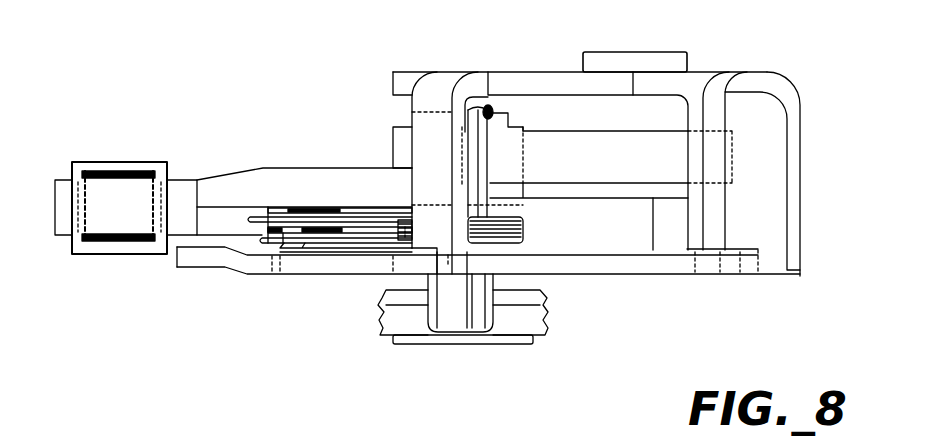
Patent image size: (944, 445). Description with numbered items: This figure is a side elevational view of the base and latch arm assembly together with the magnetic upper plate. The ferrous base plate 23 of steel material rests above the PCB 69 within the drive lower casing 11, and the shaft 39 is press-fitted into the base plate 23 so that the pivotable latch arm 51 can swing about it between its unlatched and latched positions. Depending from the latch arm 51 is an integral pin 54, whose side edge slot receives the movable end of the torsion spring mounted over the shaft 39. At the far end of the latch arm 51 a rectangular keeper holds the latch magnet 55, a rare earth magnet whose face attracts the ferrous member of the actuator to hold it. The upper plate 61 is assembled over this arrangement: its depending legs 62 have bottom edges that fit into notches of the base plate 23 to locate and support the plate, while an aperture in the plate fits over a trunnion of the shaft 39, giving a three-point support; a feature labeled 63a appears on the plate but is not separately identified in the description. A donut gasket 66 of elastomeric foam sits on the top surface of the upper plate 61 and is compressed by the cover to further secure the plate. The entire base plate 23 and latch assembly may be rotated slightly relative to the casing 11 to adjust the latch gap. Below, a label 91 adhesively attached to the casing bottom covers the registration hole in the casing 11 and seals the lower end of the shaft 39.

The latch magnet 55 is at (135, 197).
The latch arm 51 is at (325, 180).
The integral pin 54 is at (300, 210).
The shaft 39 is at (495, 105).
The upper plate 61 is at (582, 87).
The gasket 66 is at (665, 63).
The depending legs 62 is at (718, 228).
The outer housing 63a is at (797, 270).
The base plate 23 is at (602, 263).
The PCB 69 is at (387, 299).
The drive lower casing 11 is at (378, 318).
The label 91 is at (403, 345).